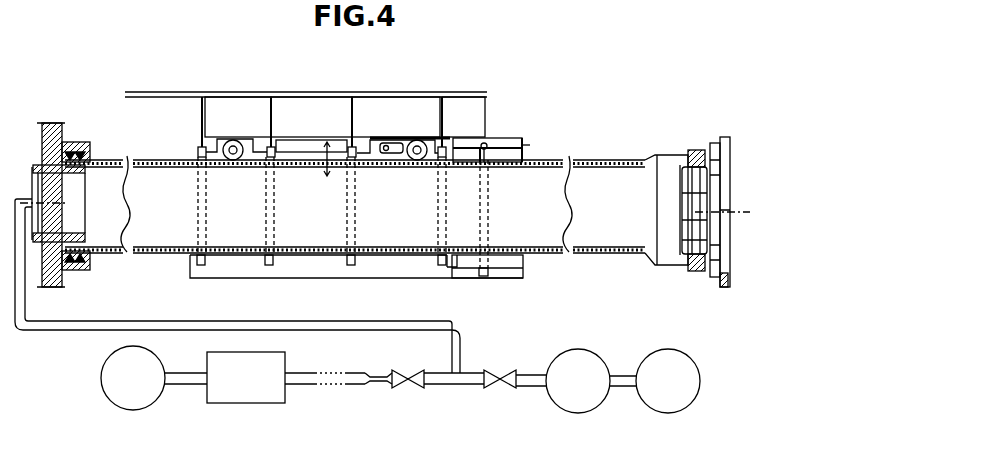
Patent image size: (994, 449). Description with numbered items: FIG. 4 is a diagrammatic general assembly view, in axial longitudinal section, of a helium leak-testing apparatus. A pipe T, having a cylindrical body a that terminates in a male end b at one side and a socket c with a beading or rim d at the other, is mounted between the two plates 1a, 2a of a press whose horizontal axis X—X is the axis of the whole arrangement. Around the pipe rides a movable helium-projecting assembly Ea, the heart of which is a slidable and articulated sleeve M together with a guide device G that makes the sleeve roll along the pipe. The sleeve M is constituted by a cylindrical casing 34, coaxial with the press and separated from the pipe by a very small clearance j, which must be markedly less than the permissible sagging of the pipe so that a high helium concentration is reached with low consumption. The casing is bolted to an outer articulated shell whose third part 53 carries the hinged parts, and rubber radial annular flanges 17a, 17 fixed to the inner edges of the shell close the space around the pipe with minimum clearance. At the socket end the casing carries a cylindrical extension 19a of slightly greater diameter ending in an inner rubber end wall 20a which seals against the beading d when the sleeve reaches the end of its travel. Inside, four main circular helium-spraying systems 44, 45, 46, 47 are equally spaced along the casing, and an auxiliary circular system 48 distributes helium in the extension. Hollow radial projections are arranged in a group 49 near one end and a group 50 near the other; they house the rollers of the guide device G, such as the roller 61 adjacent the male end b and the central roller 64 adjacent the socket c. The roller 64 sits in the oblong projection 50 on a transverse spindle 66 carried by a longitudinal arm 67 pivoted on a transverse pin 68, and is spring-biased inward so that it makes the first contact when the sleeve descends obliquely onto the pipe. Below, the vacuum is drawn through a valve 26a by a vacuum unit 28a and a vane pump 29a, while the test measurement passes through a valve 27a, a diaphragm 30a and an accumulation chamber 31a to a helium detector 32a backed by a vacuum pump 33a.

The plate of the press 1a is at (722, 287).
The plate of the press 2a is at (52, 276).
The rubber radial annular flange 17 is at (452, 268).
The rubber radial annular flange 17a is at (198, 152).
The cylindrical extension 19a is at (499, 138).
The inner radial annular end wall 20a is at (530, 145).
The valve 26a is at (496, 388).
The valve 27a is at (410, 388).
The vacuum unit 28a is at (581, 398).
The vane pump 29a is at (669, 398).
The diaphragm 30a is at (373, 376).
The accumulation chamber 31a is at (310, 373).
The helium detector 32a is at (238, 395).
The vacuum pump 33a is at (131, 393).
The cylindrical casing 34 is at (302, 160).
The main circular helium-spraying system 44 is at (204, 160).
The main circular helium-spraying system 45 is at (273, 160).
The main circular helium-spraying system 46 is at (352, 160).
The main circular helium-spraying system 47 is at (444, 160).
The auxiliary circular spraying system 48 is at (487, 160).
The radial projection group 49 is at (240, 138).
The radial projection group 50 is at (444, 148).
The third part of outer cylindrical shell 53 is at (308, 139).
The roller 61 is at (234, 161).
The central roller 64 is at (418, 161).
The transverse spindle 66 is at (411, 140).
The longitudinal arm 67 is at (390, 157).
The transverse pin 68 is at (382, 144).
The guide device G is at (425, 136).
The pipe T is at (602, 160).
The horizontal axis X is at (380, 197).
The cylindrical body a is at (540, 167).
The male end b is at (107, 164).
The socket c is at (682, 179).
The beading d is at (700, 150).
The clearance j is at (328, 173).
The movable helium-projecting assembly Ea is at (185, 273).
The slidable and articulated sleeve M is at (478, 280).